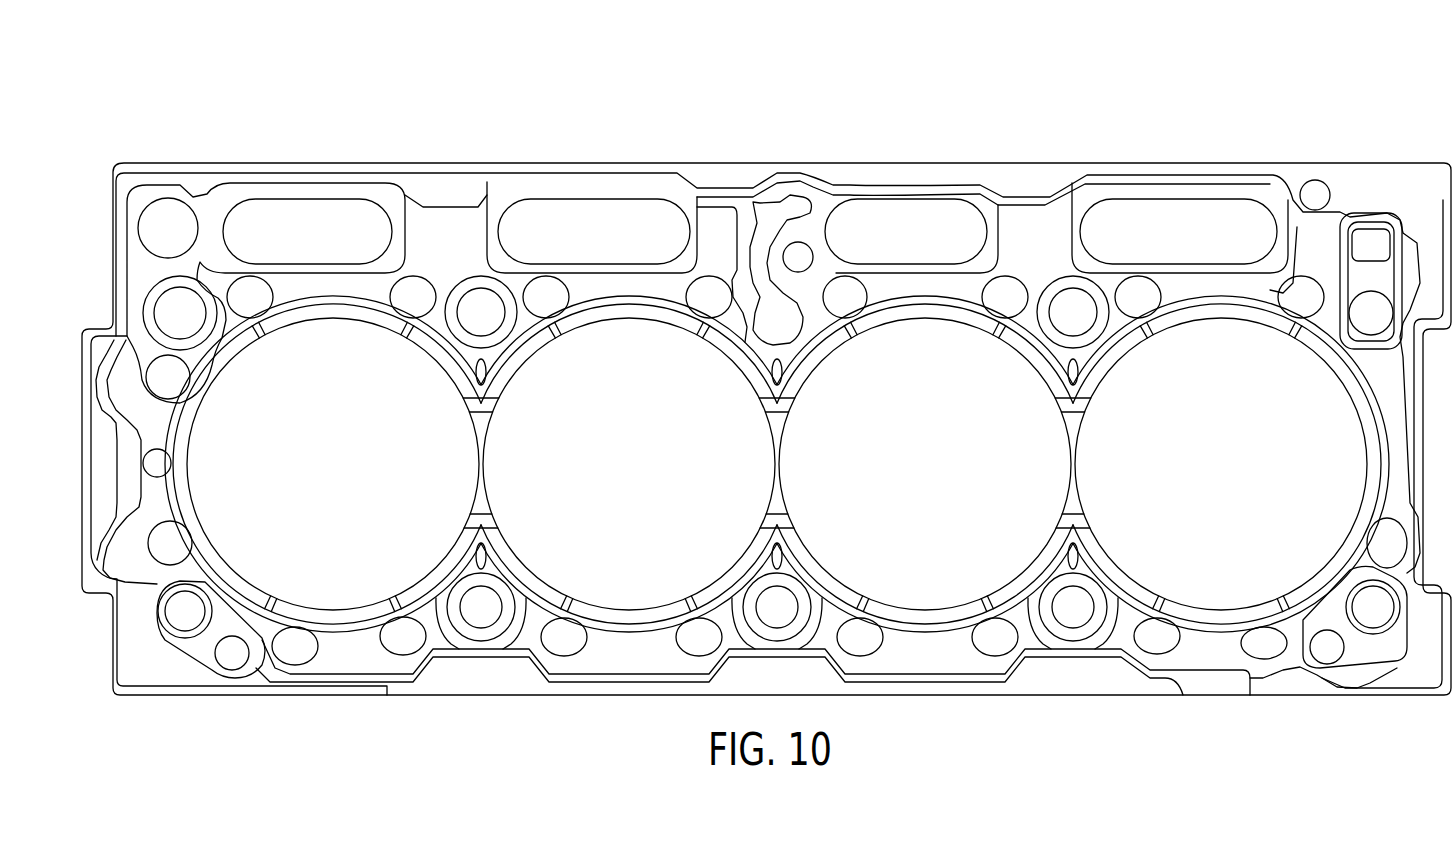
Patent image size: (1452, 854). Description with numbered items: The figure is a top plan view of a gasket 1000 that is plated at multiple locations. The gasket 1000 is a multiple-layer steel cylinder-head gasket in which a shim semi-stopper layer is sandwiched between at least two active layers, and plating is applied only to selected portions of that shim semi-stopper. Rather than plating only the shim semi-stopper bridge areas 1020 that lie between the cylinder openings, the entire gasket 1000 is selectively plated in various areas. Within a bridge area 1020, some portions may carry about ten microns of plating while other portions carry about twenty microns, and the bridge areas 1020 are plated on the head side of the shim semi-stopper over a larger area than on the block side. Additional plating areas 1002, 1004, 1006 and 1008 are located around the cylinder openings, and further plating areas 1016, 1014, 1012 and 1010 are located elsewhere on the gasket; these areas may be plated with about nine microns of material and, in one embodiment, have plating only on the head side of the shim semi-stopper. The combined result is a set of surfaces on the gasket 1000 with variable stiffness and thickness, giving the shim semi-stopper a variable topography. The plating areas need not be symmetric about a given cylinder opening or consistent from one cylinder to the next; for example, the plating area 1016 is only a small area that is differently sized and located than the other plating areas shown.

The gasket 1000 is at (818, 110).
The plating area 1002 is at (333, 309).
The plating area 1004 is at (632, 309).
The plating area 1006 is at (930, 309).
The plating area 1008 is at (1228, 309).
The plating area 1010 is at (1208, 618).
The plating area 1012 is at (918, 616).
The plating area 1014 is at (628, 618).
The plating area 1016 is at (396, 602).
The shim semi-stopper bridge area 1020 is at (488, 438).